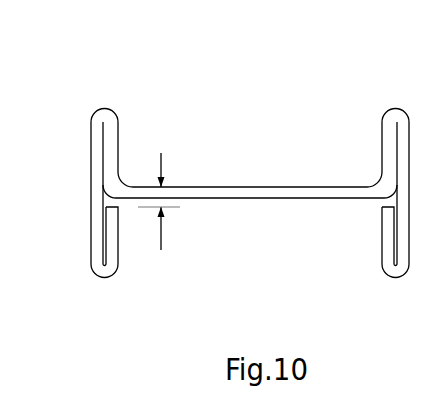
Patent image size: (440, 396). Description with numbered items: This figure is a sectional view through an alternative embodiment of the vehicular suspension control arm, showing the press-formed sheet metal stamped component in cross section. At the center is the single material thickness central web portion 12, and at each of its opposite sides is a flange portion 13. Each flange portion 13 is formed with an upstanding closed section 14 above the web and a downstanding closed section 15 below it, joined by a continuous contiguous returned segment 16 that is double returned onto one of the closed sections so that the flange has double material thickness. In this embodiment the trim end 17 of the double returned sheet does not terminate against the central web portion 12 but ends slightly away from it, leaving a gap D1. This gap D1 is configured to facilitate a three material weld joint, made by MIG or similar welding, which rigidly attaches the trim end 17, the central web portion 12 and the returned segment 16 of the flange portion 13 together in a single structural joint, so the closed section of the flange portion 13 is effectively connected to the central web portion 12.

The central web portion 12 is at (225, 187).
The flange portion 13 is at (130, 138).
The upstanding closed section 14 is at (104, 110).
The downstanding closed section 15 is at (105, 272).
The continuous contiguous returned segment 16 is at (97, 215).
The trim end 17 is at (391, 206).
The gap D1 is at (166, 204).